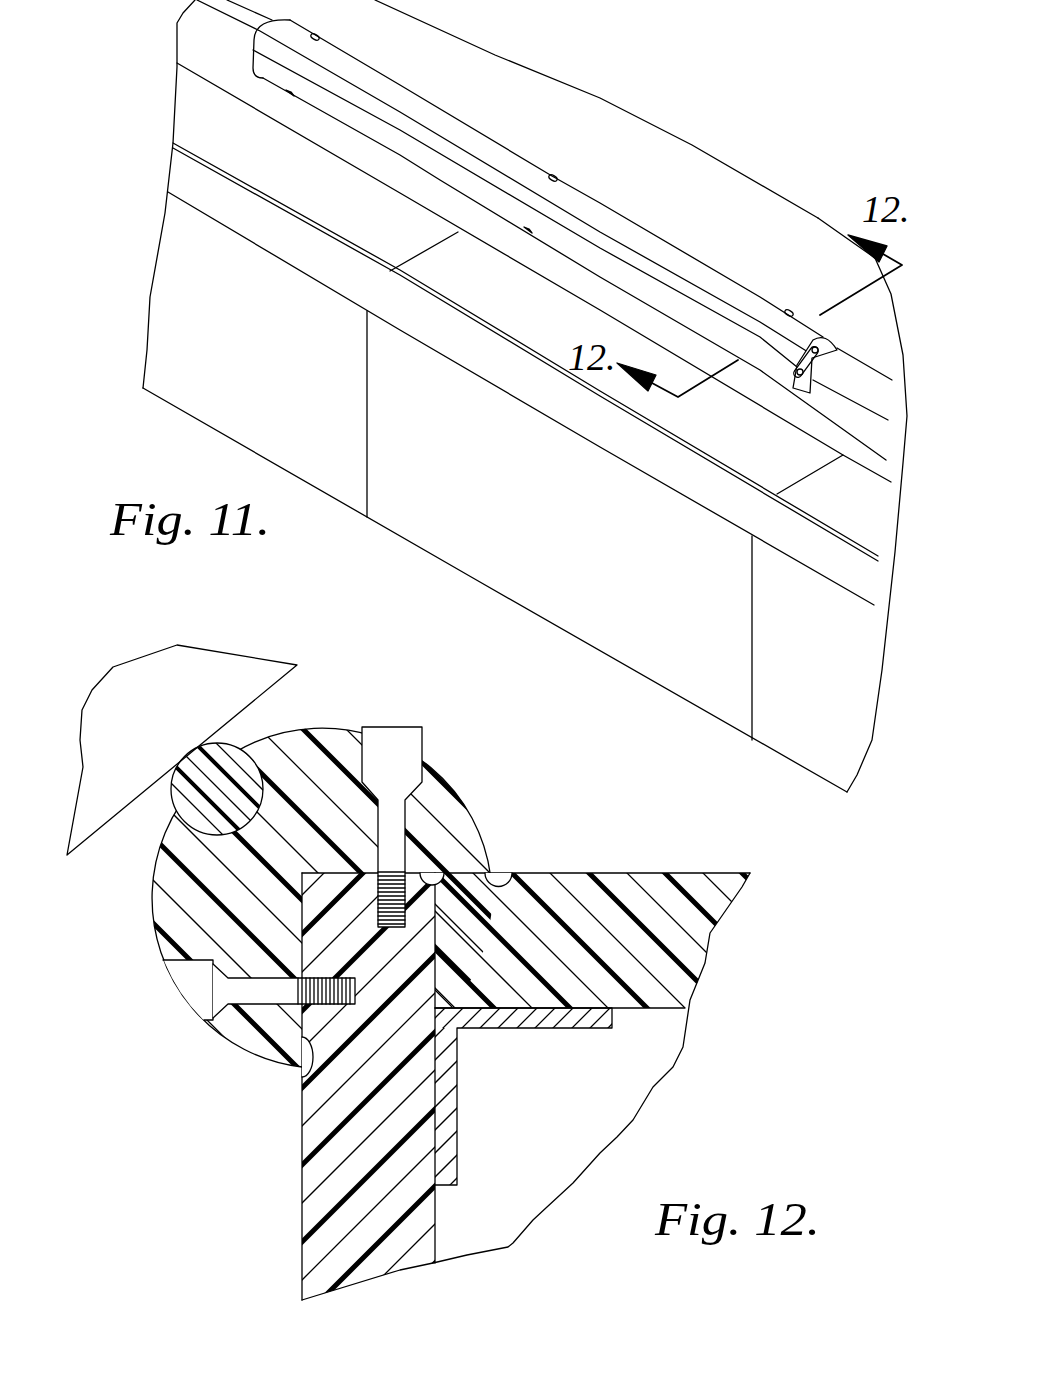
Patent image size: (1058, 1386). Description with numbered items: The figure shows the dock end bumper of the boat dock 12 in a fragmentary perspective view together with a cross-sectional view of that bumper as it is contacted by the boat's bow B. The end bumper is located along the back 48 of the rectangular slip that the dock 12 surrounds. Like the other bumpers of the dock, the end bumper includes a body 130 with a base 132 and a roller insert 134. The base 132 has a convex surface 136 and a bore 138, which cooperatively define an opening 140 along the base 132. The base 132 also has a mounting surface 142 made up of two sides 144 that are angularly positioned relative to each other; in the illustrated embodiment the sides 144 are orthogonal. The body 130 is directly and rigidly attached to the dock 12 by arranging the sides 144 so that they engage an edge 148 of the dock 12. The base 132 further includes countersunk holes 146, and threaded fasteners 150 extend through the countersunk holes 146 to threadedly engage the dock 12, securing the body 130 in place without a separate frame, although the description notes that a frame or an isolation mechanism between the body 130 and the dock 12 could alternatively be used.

In FIG. 11, the dock 12 is at (495, 57).
In FIG. 11, the back 48 is at (528, 230).
In FIG. 11, the body 130 is at (335, 60).
In FIG. 11, the base 132 is at (490, 147).
In FIG. 11, the roller insert 134 is at (610, 240).
In FIG. 11, the edge 148 is at (845, 400).
In FIG. 12, the convex surface 136 is at (452, 777).
In FIG. 12, the bore 138 is at (220, 748).
In FIG. 12, the opening 140 is at (160, 805).
In FIG. 12, the mounting surface 142 is at (520, 873).
In FIG. 12, the sides 144 is at (443, 875).
In FIG. 12, the countersunk holes 146 is at (373, 755).
In FIG. 12, the threaded fasteners 150 is at (235, 992).
In FIG. 12, the plate B is at (227, 657).